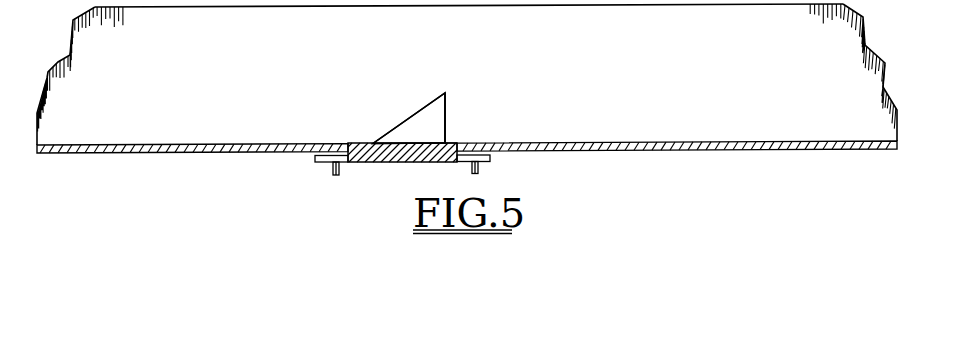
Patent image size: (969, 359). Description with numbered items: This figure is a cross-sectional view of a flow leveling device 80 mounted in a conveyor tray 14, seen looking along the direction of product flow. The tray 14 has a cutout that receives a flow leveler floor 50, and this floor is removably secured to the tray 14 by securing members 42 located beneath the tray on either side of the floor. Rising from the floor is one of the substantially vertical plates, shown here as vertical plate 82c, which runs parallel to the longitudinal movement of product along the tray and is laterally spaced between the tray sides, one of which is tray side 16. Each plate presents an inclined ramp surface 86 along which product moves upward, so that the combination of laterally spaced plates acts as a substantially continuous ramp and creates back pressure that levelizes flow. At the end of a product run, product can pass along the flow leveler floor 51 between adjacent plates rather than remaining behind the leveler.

The tray 14 is at (175, 153).
The tray side 16 is at (161, 112).
The securing member 42 is at (478, 173).
The flow leveler floor 50 is at (397, 162).
The flow leveler floor 51 is at (448, 141).
The flow leveling device 80 is at (453, 98).
The vertical plate 82c is at (420, 120).
The inclined ramp surface 86 is at (436, 94).